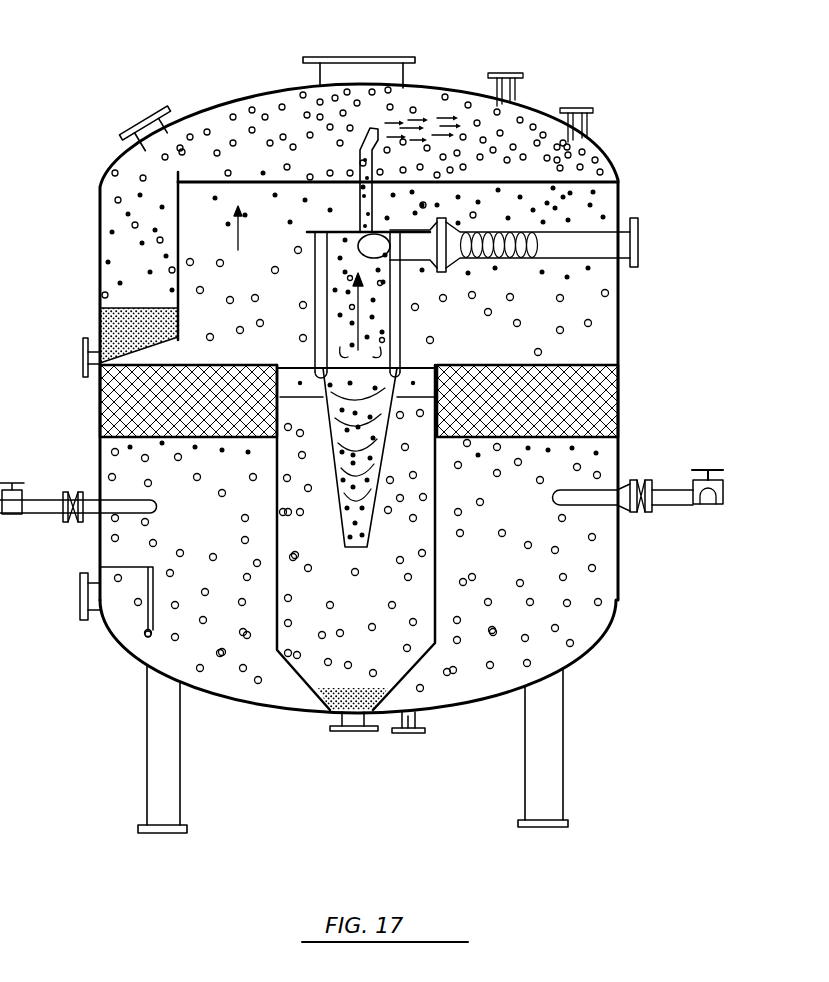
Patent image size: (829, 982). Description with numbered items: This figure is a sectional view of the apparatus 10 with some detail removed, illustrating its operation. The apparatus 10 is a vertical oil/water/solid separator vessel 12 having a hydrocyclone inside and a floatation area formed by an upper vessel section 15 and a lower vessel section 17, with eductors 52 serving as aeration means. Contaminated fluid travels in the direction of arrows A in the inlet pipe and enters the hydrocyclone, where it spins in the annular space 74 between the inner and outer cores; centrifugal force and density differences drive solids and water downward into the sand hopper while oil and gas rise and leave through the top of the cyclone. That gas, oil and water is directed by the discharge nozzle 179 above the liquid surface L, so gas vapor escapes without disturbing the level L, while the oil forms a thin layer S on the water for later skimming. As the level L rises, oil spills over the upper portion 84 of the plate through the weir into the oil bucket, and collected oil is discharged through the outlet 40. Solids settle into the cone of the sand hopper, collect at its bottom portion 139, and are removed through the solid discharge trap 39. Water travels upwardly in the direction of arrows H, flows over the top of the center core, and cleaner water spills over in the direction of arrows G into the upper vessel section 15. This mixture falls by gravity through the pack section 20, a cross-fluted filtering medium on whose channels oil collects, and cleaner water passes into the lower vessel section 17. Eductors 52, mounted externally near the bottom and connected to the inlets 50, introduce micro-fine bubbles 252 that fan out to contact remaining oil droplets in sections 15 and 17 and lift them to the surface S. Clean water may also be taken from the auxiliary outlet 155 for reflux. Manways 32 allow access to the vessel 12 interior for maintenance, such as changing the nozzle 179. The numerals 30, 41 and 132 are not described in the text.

The apparatus 10 is at (463, 51).
The separator vessel 12 is at (620, 322).
The upper vessel section 15 is at (218, 319).
The lower vessel section 17 is at (189, 503).
The pack section 20 is at (100, 410).
The inlet pipe 30 is at (638, 222).
The manway 32 is at (376, 57).
The solid discharge trap 39 is at (355, 731).
The discharge port 40 is at (100, 366).
The lower side nozzle 41 is at (80, 608).
The inlet port 50 is at (72, 522).
The eductor 52 is at (65, 466).
The annular space 74 is at (322, 231).
The upper portion of plate 84 is at (179, 181).
The tilted nozzle 132 is at (138, 124).
The bottom portion 139 is at (327, 713).
The auxiliary outlet 155 is at (405, 734).
The discharge nozzle 179 is at (361, 167).
The micro-fine bubbles 252 is at (222, 527).
The oil surface layer S is at (224, 181).
The water spill-over flow arrows G is at (232, 355).
The upward water flow arrows H is at (347, 550).
The fluid flow arrows A is at (545, 247).
The liquid surface level L is at (622, 174).